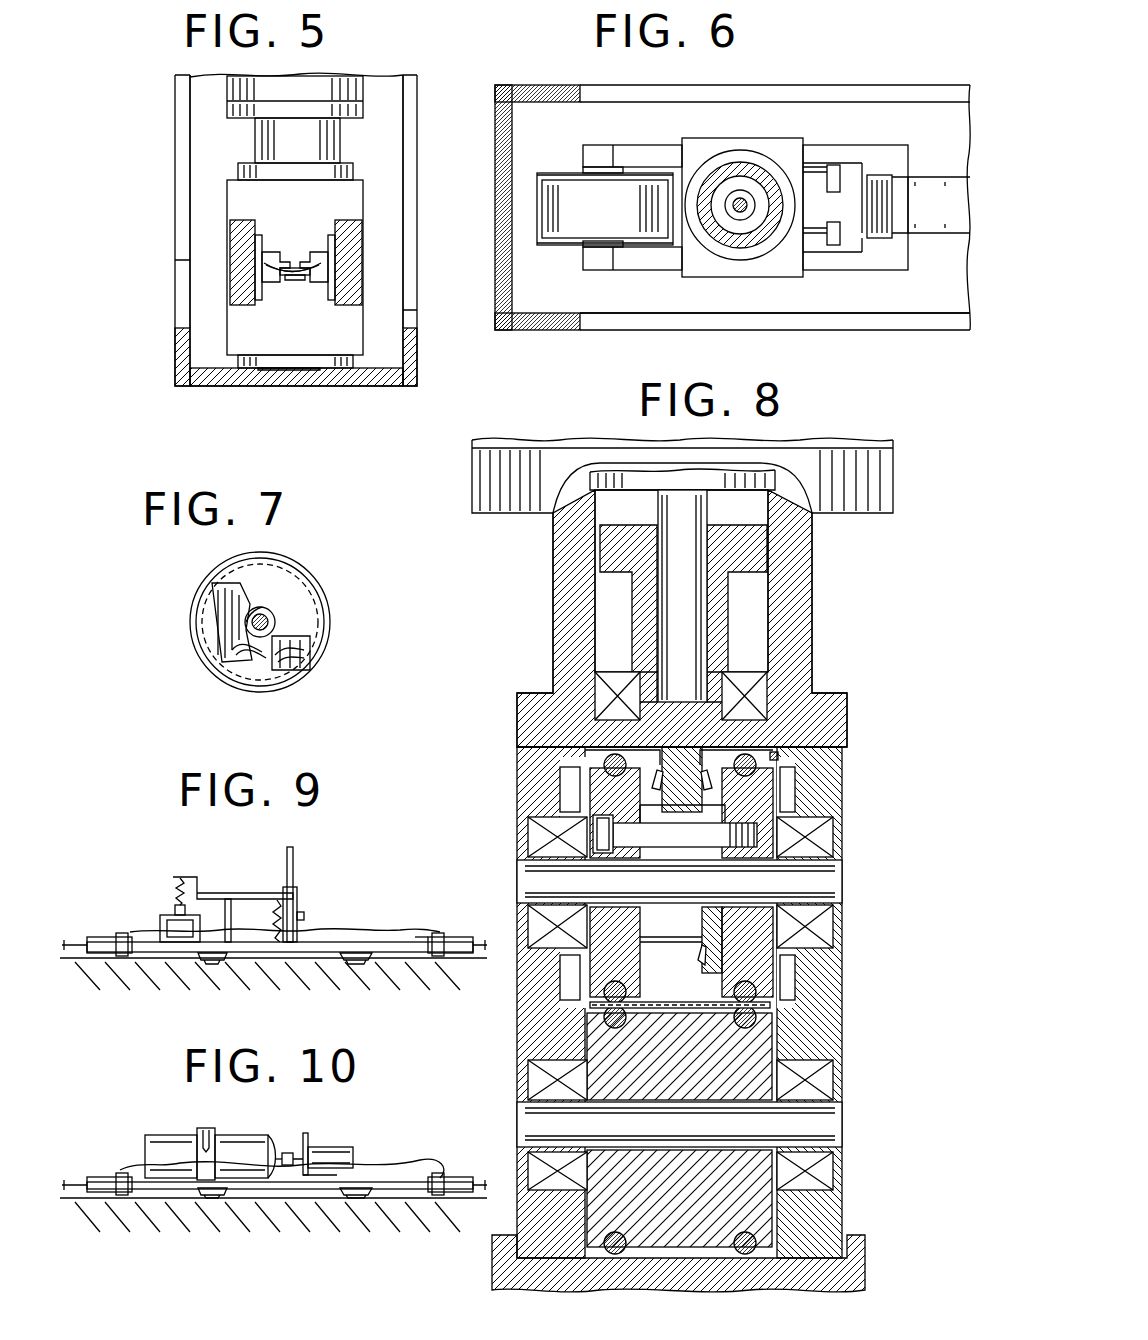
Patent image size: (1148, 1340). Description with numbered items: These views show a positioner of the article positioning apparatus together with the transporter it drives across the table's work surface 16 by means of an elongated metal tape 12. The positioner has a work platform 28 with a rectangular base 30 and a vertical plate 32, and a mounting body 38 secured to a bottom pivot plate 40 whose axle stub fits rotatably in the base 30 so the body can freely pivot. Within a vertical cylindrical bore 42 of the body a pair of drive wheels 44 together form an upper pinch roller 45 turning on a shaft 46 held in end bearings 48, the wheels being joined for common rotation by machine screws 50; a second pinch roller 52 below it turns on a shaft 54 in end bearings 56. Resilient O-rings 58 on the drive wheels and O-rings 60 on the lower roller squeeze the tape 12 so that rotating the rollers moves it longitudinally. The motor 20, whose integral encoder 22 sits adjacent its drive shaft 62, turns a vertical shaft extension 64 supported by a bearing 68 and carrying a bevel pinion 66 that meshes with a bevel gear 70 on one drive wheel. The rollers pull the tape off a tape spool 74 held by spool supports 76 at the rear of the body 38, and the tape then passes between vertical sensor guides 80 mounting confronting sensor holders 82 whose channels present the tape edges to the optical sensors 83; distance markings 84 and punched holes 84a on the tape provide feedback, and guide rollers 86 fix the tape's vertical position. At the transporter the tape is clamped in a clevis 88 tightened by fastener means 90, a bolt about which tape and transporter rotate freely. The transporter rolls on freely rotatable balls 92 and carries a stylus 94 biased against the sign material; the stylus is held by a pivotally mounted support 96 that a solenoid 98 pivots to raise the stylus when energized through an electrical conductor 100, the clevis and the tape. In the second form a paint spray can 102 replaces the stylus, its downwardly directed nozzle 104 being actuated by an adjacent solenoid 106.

In FIG. 5, the tape 12 is at (296, 282).
In FIG. 6, the tape 12 is at (948, 203).
In FIG. 8, the tape 12 is at (772, 1005).
In FIG. 9, the tape 12 is at (82, 942).
In FIG. 10, the tape 12 is at (80, 1181).
In FIG. 9, the work surface 16 is at (324, 943).
In FIG. 10, the work surface 16 is at (262, 1200).
In FIG. 5, the motor 20 is at (358, 84).
In FIG. 6, the motor 20 is at (748, 148).
In FIG. 7, the motor 20 is at (296, 582).
In FIG. 8, the motor 20 is at (888, 482).
In FIG. 7, the encoder 22 is at (295, 640).
In FIG. 5, the work platform 28 is at (415, 347).
In FIG. 5, the base 30 is at (332, 378).
In FIG. 6, the base 30 is at (870, 300).
In FIG. 5, the vertical plate 32 is at (392, 109).
In FIG. 6, the vertical plate 32 is at (495, 196).
In FIG. 5, the mounting body 38 is at (348, 183).
In FIG. 6, the mounting body 38 is at (703, 266).
In FIG. 8, the mounting body 38 is at (845, 772).
In FIG. 5, the bottom pivot plate 40 is at (262, 374).
In FIG. 8, the bottom pivot plate 40 is at (858, 1268).
In FIG. 8, the cylindrical bore 42 is at (805, 712).
In FIG. 8, the drive wheels 44 is at (595, 798).
In FIG. 8, the upper pinch roller 45 is at (780, 757).
In FIG. 8, the shaft 46 is at (842, 876).
In FIG. 8, the end bearings 48 is at (538, 831).
In FIG. 8, the machine screws 50 is at (602, 853).
In FIG. 8, the second pinch roller 52 is at (762, 1030).
In FIG. 8, the shaft 54 is at (830, 1126).
In FIG. 8, the end bearings 56 is at (540, 1078).
In FIG. 8, the O-rings 58 is at (740, 988).
In FIG. 8, the O-rings 60 is at (615, 1256).
In FIG. 6, the drive shaft 62 is at (735, 200).
In FIG. 7, the drive shaft 62 is at (268, 606).
In FIG. 8, the drive shaft 62 is at (690, 612).
In FIG. 8, the shaft extension 64 is at (720, 638).
In FIG. 8, the bevel pinion 66 is at (655, 808).
In FIG. 8, the bearing 68 is at (600, 693).
In FIG. 5, the bevel gear 70 is at (293, 259).
In FIG. 8, the bevel gear 70 is at (718, 932).
In FIG. 6, the tape spool 74 is at (558, 248).
In FIG. 6, the spool supports 76 is at (630, 145).
In FIG. 5, the sensor guides 80 is at (235, 231).
In FIG. 6, the sensor guides 80 is at (815, 146).
In FIG. 5, the sensor holders 82 is at (258, 233).
In FIG. 6, the sensor holders 82 is at (845, 200).
In FIG. 5, the optical sensors 83 is at (268, 288).
In FIG. 6, the optical sensors 83 is at (833, 164).
In FIG. 6, the tape indicia 84 is at (932, 232).
In FIG. 6, the tape indicia 84a is at (935, 178).
In FIG. 6, the guide rollers 86 is at (882, 172).
In FIG. 9, the clevis 88 is at (112, 938).
In FIG. 10, the clevis 88 is at (108, 1177).
In FIG. 9, the fastener means 90 is at (430, 937).
In FIG. 9, the balls 92 is at (212, 963).
In FIG. 10, the balls 92 is at (212, 1200).
In FIG. 9, the stylus 94 is at (293, 858).
In FIG. 9, the arm 96 is at (205, 893).
In FIG. 9, the solenoid 98 is at (168, 915).
In FIG. 9, the electrical conductor 100 is at (360, 930).
In FIG. 10, the electrical conductor 100 is at (418, 1163).
In FIG. 10, the paint spray can 102 is at (170, 1135).
In FIG. 10, the nozzle 104 is at (300, 1153).
In FIG. 10, the solenoid 106 is at (342, 1147).